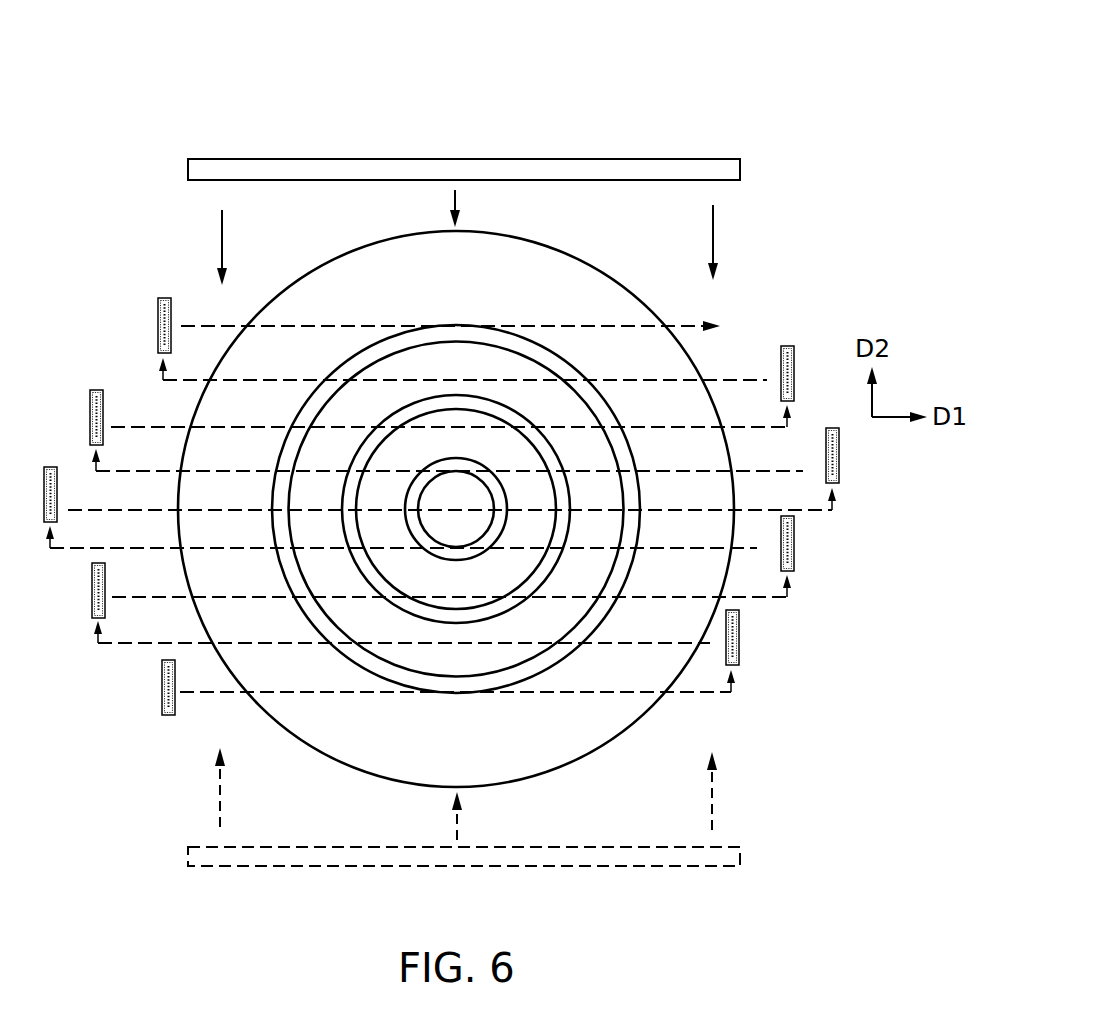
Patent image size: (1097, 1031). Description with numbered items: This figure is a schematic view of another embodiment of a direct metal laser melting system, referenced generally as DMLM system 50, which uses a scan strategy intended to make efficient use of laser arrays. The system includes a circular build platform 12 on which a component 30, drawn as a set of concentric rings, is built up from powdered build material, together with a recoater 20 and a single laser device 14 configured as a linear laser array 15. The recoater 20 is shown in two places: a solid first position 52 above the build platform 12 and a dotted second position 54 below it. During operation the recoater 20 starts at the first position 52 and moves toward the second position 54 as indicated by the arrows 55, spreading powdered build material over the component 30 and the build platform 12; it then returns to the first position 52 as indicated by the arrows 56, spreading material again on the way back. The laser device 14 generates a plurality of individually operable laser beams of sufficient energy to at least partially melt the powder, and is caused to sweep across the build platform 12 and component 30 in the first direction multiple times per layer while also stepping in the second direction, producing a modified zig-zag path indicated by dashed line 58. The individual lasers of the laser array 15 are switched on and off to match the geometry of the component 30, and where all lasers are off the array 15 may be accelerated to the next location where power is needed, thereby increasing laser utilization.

The DMLM system 50 is at (755, 50).
The first position 52 is at (220, 159).
The second position 54 is at (215, 867).
The recoater 20 is at (680, 159).
The arrows 55 is at (714, 237).
The arrows 56 is at (716, 810).
The build platform 12 is at (326, 262).
The component 30 is at (509, 330).
The laser device 14 is at (441, 506).
The laser array 15 is at (160, 691).
The dashed line 58 is at (703, 692).